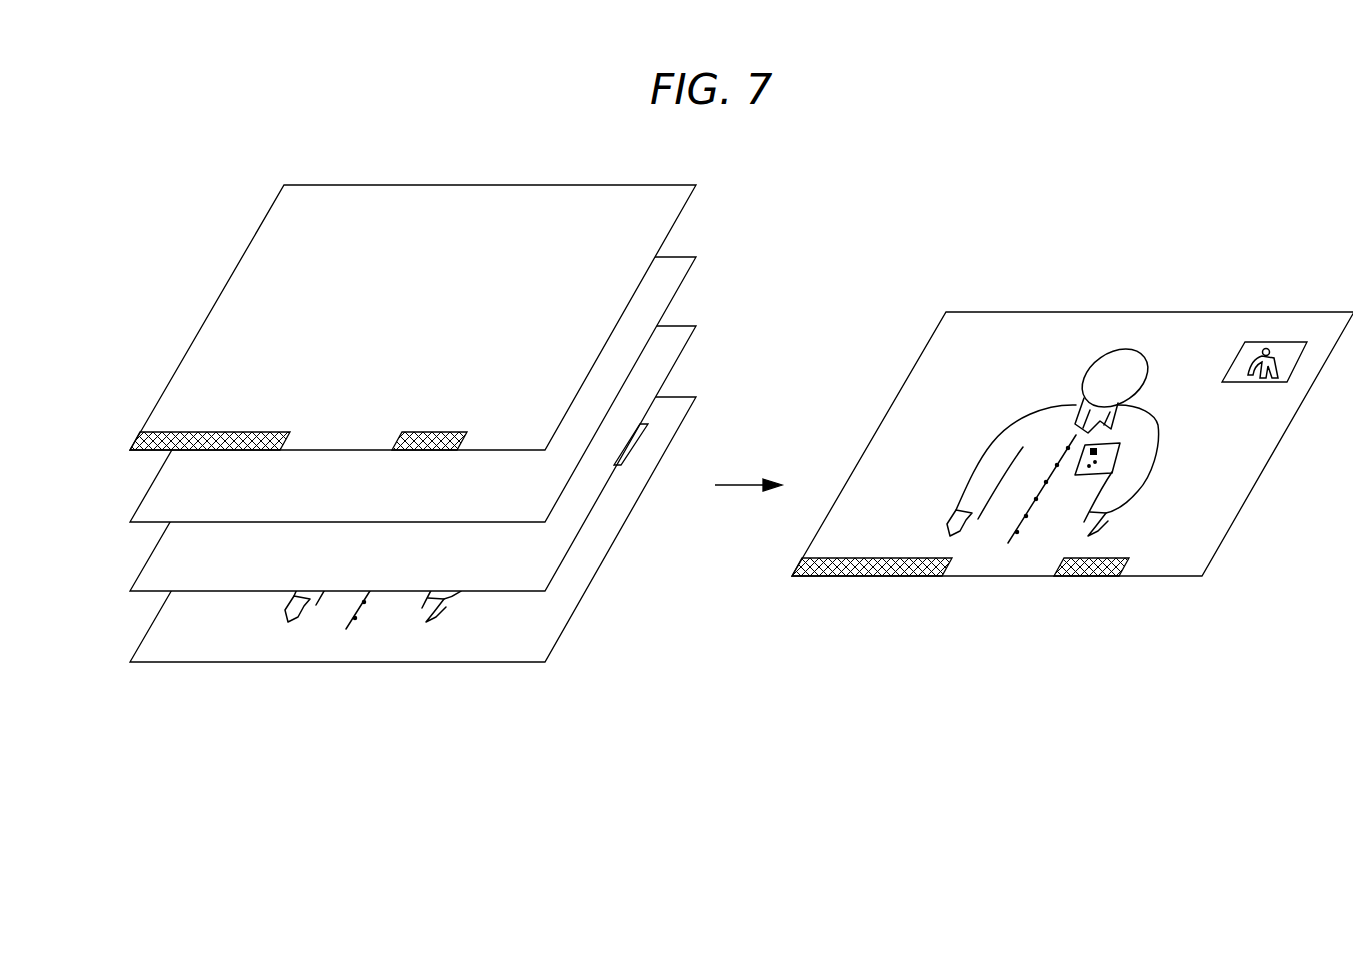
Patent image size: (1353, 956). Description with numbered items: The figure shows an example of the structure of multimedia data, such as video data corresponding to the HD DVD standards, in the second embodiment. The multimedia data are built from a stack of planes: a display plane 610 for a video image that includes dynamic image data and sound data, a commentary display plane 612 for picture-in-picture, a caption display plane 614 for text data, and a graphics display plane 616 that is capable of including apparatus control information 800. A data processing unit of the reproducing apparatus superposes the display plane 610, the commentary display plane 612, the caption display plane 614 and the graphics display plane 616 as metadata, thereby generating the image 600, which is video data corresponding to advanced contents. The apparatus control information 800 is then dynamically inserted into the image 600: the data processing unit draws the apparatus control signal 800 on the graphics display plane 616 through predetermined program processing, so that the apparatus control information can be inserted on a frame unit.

The image 600 is at (1213, 325).
The display plane for a video image 610 is at (205, 642).
The commentary display plane 612 is at (158, 573).
The caption display plane 614 is at (158, 508).
The graphics display plane 616 is at (255, 275).
The apparatus control information 800 is at (140, 440).